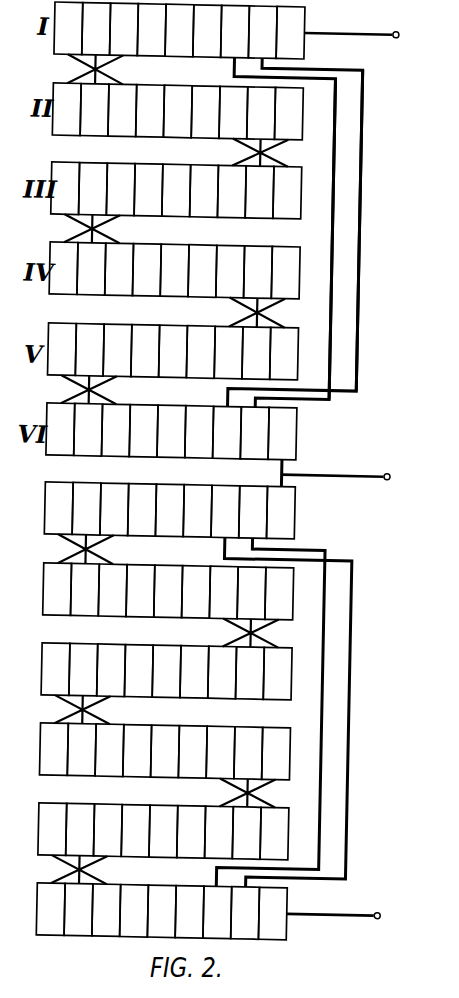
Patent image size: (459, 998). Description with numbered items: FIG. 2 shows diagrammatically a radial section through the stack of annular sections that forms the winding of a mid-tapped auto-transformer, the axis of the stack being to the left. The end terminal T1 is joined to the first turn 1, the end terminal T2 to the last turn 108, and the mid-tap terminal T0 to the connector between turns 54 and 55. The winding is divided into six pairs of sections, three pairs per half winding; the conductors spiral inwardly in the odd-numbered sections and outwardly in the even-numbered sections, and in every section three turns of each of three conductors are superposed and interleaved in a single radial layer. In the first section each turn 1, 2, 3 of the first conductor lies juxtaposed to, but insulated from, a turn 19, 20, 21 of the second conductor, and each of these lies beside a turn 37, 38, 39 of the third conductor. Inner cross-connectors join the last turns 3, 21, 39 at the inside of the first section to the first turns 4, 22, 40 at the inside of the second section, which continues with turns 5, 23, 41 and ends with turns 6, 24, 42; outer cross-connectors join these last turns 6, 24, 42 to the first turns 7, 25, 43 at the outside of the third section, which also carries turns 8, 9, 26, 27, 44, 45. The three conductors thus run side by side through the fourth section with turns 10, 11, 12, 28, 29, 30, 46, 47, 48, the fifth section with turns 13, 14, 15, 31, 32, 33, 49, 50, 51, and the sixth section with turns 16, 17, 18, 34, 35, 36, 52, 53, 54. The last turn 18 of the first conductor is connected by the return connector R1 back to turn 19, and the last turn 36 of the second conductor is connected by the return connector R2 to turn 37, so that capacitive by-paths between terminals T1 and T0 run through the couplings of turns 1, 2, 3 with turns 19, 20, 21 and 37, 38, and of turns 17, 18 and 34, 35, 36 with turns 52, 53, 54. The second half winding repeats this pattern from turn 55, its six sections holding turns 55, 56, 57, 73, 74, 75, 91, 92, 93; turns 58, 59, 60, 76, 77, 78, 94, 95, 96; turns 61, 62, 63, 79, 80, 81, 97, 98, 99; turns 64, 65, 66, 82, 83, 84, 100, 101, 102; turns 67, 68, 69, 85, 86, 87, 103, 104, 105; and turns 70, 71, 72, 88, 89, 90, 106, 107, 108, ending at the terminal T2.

The turn 1 is at (290, 32).
The turn 2 is at (207, 31).
The turn 3 is at (124, 29).
The turn 4 is at (66, 109).
The winding section 5 is at (150, 111).
The turn 6 is at (233, 112).
The turn 7 is at (287, 192).
The winding section 8 is at (204, 191).
The winding section 9 is at (120, 189).
The winding section 10 is at (63, 268).
The winding section 11 is at (146, 270).
The winding section 12 is at (230, 271).
The winding section 13 is at (284, 353).
The winding section 14 is at (200, 352).
The winding section 15 is at (117, 350).
The winding section 16 is at (60, 429).
The turn 17 is at (143, 431).
The turn 18 is at (227, 432).
The turn 19 is at (262, 32).
The turn 20 is at (179, 30).
The turn 21 is at (96, 29).
The turn 22 is at (94, 110).
The winding section 23 is at (177, 111).
The turn 24 is at (261, 113).
The turn 25 is at (259, 192).
The winding section 26 is at (176, 190).
The winding section 27 is at (93, 189).
The winding section 28 is at (91, 269).
The winding section 29 is at (174, 270).
The winding section 30 is at (258, 272).
The winding section 31 is at (256, 353).
The winding section 32 is at (173, 351).
The winding section 33 is at (89, 349).
The turn 34 is at (88, 429).
The turn 35 is at (171, 431).
The turn 36 is at (254, 433).
The turn 37 is at (235, 31).
The turn 38 is at (151, 30).
The turn 39 is at (68, 28).
The turn 40 is at (122, 110).
The winding section 41 is at (205, 112).
The turn 42 is at (288, 113).
The turn 43 is at (231, 191).
The winding section 44 is at (148, 190).
The winding section 45 is at (65, 188).
The winding section 46 is at (119, 269).
The winding section 47 is at (202, 271).
The winding section 48 is at (285, 272).
The winding section 49 is at (228, 352).
The winding section 50 is at (145, 351).
The winding section 51 is at (62, 349).
The turn 52 is at (115, 430).
The turn 53 is at (199, 432).
The turn 54 is at (282, 433).
The turn 55 is at (280, 512).
The winding section 56 is at (197, 511).
The winding section 57 is at (114, 509).
The winding section 58 is at (57, 589).
The winding section 59 is at (140, 591).
The winding section 60 is at (223, 592).
The winding section 61 is at (277, 673).
The winding section 62 is at (194, 672).
The winding section 63 is at (111, 670).
The winding section 64 is at (53, 749).
The winding section 65 is at (137, 751).
The winding section 66 is at (220, 752).
The winding section 67 is at (274, 833).
The winding section 68 is at (191, 832).
The winding section 69 is at (107, 830).
The winding section 70 is at (50, 909).
The winding section 71 is at (134, 910).
The winding section 72 is at (217, 912).
The winding section 73 is at (253, 512).
The winding section 74 is at (169, 510).
The winding section 75 is at (86, 508).
The winding section 76 is at (84, 589).
The winding section 77 is at (168, 591).
The winding section 78 is at (251, 593).
The winding section 79 is at (249, 673).
The winding section 80 is at (166, 671).
The winding section 81 is at (83, 669).
The winding section 82 is at (81, 749).
The winding section 83 is at (165, 751).
The winding section 84 is at (248, 753).
The winding section 85 is at (246, 833).
The winding section 86 is at (163, 831).
The winding section 87 is at (80, 829).
The winding section 88 is at (78, 909).
The winding section 89 is at (161, 911).
The winding section 90 is at (245, 913).
The winding section 91 is at (225, 511).
The winding section 92 is at (142, 510).
The winding section 93 is at (58, 508).
The winding section 94 is at (112, 590).
The winding section 95 is at (196, 592).
The winding section 96 is at (279, 593).
The winding section 97 is at (222, 672).
The winding section 98 is at (138, 671).
The winding section 99 is at (55, 669).
The winding section 100 is at (109, 750).
The winding section 101 is at (192, 752).
The winding section 102 is at (276, 753).
The winding section 103 is at (219, 832).
The winding section 104 is at (135, 831).
The winding section 105 is at (52, 829).
The winding section 106 is at (106, 910).
The winding section 107 is at (189, 912).
The turn 108 is at (272, 913).
The end terminal T1 is at (365, 36).
The mid-tap terminal T0 is at (349, 478).
The end terminal T2 is at (348, 922).
The return connector R1 is at (364, 134).
The return connector R2 is at (337, 210).